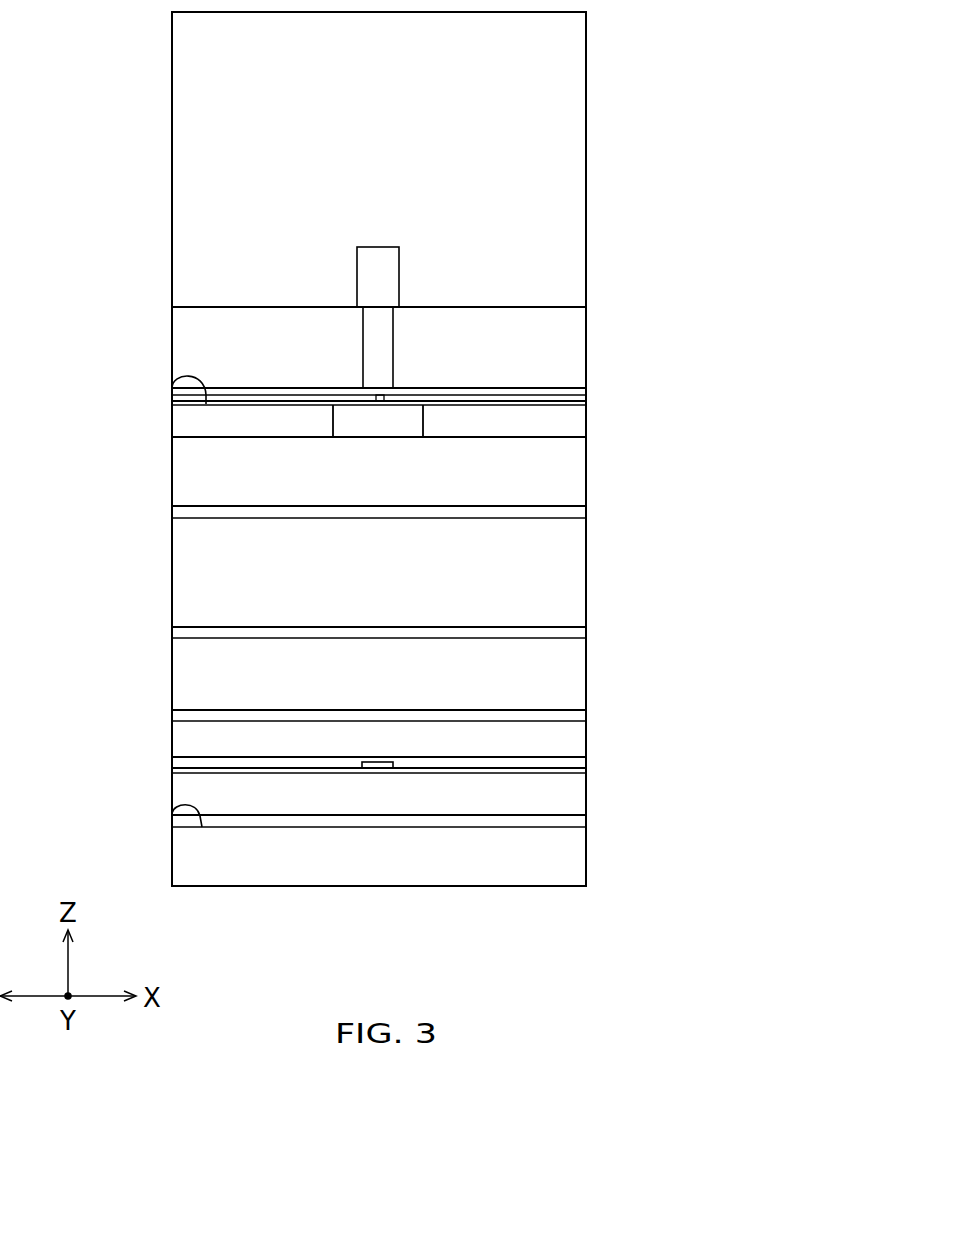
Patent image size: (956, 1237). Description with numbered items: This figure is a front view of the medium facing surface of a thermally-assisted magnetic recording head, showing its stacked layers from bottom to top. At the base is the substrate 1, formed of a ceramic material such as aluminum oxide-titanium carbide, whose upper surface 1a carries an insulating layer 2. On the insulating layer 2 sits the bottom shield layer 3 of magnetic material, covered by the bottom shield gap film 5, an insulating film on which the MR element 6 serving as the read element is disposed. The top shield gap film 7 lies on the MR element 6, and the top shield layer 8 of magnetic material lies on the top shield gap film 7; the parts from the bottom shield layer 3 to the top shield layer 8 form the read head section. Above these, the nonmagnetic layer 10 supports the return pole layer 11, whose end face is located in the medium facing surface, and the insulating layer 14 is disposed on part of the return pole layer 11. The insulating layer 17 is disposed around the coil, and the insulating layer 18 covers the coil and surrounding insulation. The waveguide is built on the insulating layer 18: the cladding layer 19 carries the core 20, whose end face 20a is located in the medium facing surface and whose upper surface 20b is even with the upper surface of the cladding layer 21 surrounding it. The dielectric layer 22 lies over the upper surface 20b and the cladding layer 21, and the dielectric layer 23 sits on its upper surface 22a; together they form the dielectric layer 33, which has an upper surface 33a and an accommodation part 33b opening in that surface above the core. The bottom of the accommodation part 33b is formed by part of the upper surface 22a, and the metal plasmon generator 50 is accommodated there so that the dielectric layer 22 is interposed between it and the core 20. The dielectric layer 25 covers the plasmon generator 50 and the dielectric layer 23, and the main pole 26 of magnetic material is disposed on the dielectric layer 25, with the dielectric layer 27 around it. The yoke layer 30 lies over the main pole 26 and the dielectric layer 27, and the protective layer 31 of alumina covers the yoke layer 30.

The protective layer 31 is at (586, 150).
The yoke layer 30 is at (357, 280).
The dielectric layer 27 is at (586, 325).
The main pole 26 is at (362, 348).
The accommodation part 33b is at (378, 395).
The upper surface 33a is at (560, 388).
The dielectric layer 25 is at (586, 388).
The dielectric layer 23 is at (586, 395).
The dielectric layer 22 is at (586, 403).
The upper surface 22a is at (172, 383).
The dielectric layer 33 is at (667, 374).
The plasmon generator 50 is at (378, 401).
The upper surface 20b is at (341, 404).
The core 20 is at (423, 423).
The end face 20a is at (402, 430).
The cladding layer 21 is at (586, 423).
The cladding layer 19 is at (586, 512).
The insulating layer 18 is at (586, 518).
The insulating layer 17 is at (586, 587).
The insulating layer 14 is at (586, 633).
The return pole layer 11 is at (586, 670).
The nonmagnetic layer 10 is at (586, 717).
The top shield layer 8 is at (586, 743).
The top shield gap film 7 is at (586, 761).
The bottom shield gap film 5 is at (586, 772).
The bottom shield layer 3 is at (586, 802).
The insulating layer 2 is at (586, 820).
The substrate 1 is at (586, 857).
The upper surface 1a is at (172, 811).
The MR element 6 is at (373, 770).